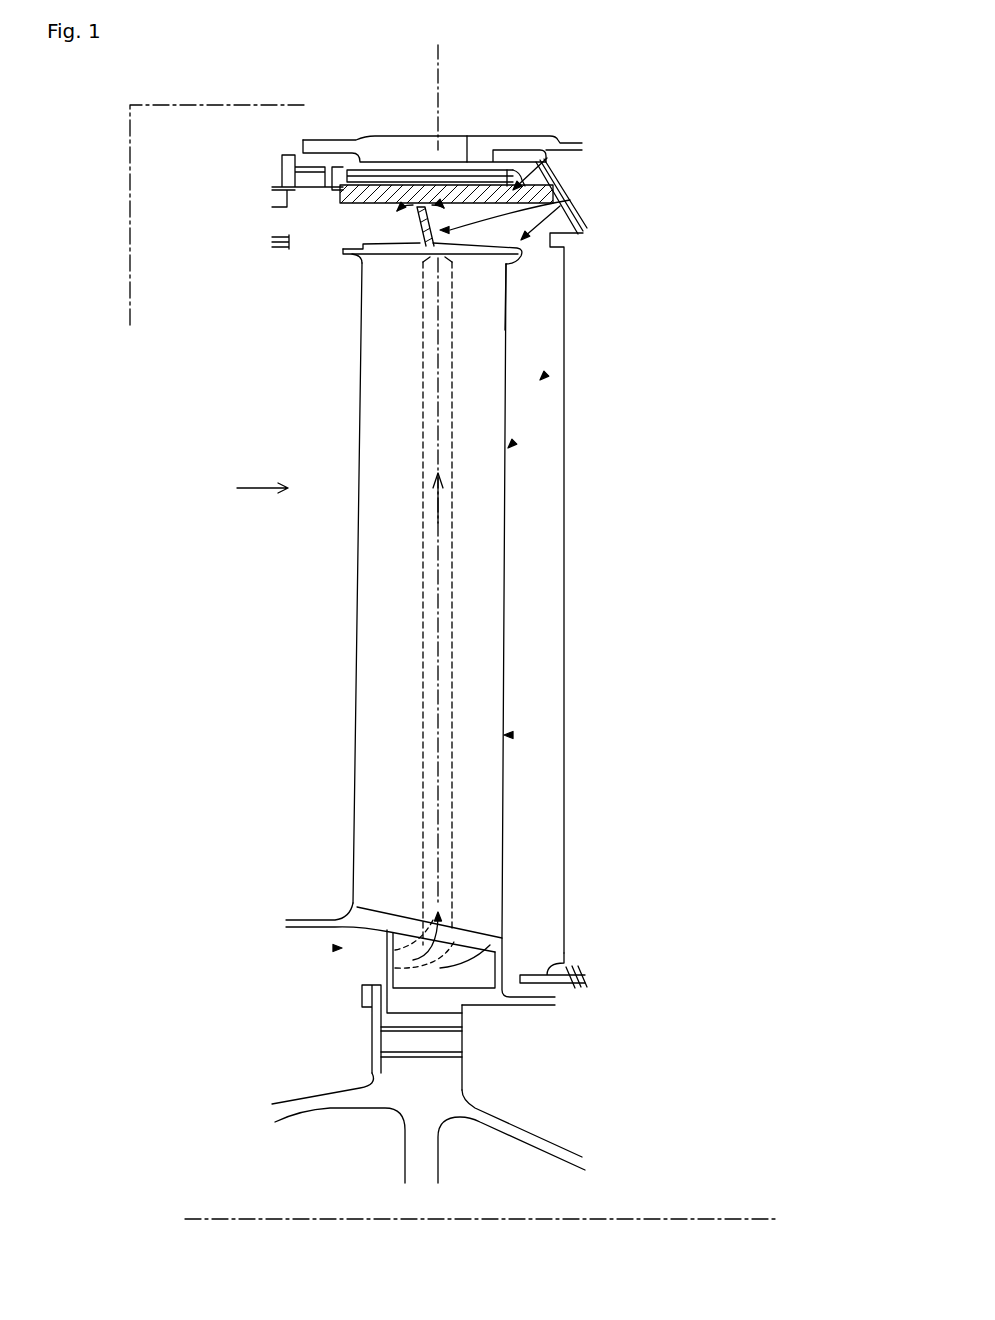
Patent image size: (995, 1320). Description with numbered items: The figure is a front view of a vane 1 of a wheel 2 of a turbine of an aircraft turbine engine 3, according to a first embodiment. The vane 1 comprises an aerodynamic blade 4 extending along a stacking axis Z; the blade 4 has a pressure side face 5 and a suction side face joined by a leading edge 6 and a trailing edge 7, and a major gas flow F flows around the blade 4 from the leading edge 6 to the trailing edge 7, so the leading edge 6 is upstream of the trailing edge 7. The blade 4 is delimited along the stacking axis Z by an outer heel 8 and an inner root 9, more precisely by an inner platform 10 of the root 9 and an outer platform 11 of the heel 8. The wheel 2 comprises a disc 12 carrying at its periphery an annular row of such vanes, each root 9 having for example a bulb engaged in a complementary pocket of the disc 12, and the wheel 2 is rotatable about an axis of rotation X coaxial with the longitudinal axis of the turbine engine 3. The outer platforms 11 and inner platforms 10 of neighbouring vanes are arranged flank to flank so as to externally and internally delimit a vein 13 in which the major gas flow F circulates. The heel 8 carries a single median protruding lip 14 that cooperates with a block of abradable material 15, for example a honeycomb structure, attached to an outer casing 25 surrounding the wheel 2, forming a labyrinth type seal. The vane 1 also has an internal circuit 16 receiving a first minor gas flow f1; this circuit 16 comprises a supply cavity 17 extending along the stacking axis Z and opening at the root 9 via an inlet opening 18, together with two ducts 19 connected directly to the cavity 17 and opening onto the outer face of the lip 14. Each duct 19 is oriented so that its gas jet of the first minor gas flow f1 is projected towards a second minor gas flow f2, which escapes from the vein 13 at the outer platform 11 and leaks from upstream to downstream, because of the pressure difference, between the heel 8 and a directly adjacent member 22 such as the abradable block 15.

The vane 1 is at (465, 575).
The wheel 2 is at (542, 378).
The turbine engine 3 is at (130, 187).
The aerodynamic blade 4 is at (510, 446).
The pressure side face 5 is at (477, 612).
The leading edge 6 is at (360, 365).
The trailing edge 7 is at (507, 312).
The outer heel 8 is at (570, 200).
The inner root 9 is at (340, 948).
The inner platform 10 is at (304, 925).
The outer platform 11 is at (380, 250).
The disc 12 is at (420, 1100).
The vein 13 is at (284, 658).
The protruding lip 14 is at (533, 184).
The block of abradable material 15 is at (382, 186).
The internal circuit 16 is at (506, 735).
The supply cavity 17 is at (447, 546).
The inlet opening 18 is at (384, 960).
The duct 19 is at (445, 256).
The directly adjacent member 22 is at (547, 158).
The outer casing 25 is at (520, 137).
The first minor gas flow f1 is at (444, 507).
The second minor gas flow f2 is at (397, 208).
The major gas flow F is at (262, 474).
The axis of rotation X is at (700, 1212).
The stacking axis Z is at (446, 101).